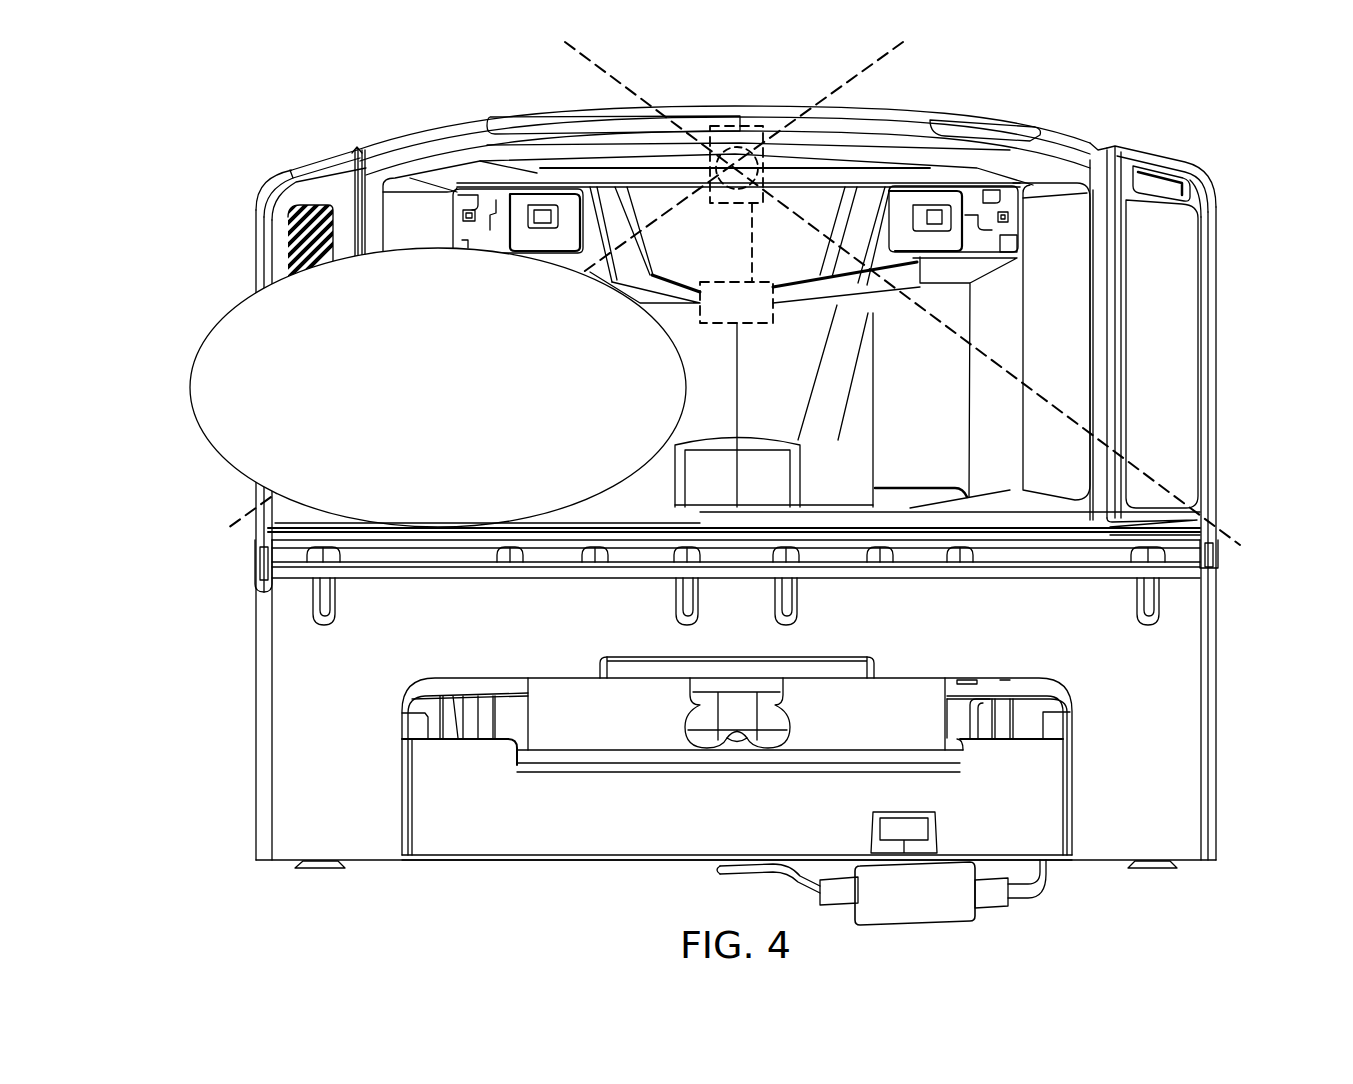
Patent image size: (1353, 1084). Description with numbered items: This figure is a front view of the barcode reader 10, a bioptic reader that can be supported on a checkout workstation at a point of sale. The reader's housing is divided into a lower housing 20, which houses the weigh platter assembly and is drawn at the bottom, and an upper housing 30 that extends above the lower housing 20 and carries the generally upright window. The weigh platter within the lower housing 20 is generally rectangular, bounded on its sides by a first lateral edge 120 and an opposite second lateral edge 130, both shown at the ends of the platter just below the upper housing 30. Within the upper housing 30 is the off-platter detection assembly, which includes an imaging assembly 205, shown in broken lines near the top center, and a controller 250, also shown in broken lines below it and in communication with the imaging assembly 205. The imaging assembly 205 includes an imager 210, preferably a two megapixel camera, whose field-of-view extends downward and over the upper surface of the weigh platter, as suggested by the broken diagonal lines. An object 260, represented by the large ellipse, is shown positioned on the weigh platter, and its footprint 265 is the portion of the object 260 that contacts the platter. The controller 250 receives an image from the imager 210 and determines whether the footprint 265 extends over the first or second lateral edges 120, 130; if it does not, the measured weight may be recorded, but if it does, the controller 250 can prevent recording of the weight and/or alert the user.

The barcode reader 10 is at (165, 124).
The upper housing 30 is at (405, 126).
The imaging assembly 205 is at (716, 114).
The imager 210 is at (752, 143).
The controller 250 is at (773, 323).
The object 260 is at (200, 345).
The footprint 265 is at (455, 518).
The first lateral edge 120 is at (1214, 540).
The second lateral edge 130 is at (256, 563).
The lower housing 20 is at (246, 760).